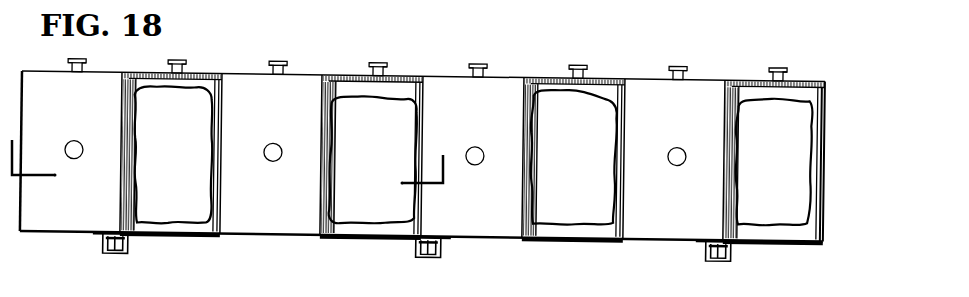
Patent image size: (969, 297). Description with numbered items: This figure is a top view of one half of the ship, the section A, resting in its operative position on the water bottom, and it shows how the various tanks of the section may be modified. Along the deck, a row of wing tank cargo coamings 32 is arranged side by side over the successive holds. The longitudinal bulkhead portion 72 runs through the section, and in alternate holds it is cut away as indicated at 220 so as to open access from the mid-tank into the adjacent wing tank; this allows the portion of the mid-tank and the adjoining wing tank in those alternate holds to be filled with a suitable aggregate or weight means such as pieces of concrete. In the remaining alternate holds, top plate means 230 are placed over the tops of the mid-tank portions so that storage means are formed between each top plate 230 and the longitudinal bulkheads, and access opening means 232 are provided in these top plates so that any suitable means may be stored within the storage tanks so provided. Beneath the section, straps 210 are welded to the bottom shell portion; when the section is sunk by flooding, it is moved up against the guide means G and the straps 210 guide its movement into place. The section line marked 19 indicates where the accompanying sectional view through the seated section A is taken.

The wing tank cargo coaming 32 is at (64, 67).
The longitudinal bulkhead portion 72 is at (141, 90).
The cut-away 220 is at (212, 133).
The access opening means 232 is at (72, 141).
The top plate means 230 is at (53, 211).
The strap 210 is at (117, 254).
The guide means G is at (131, 246).
The section A is at (302, 82).
The section line 19 is at (247, 174).